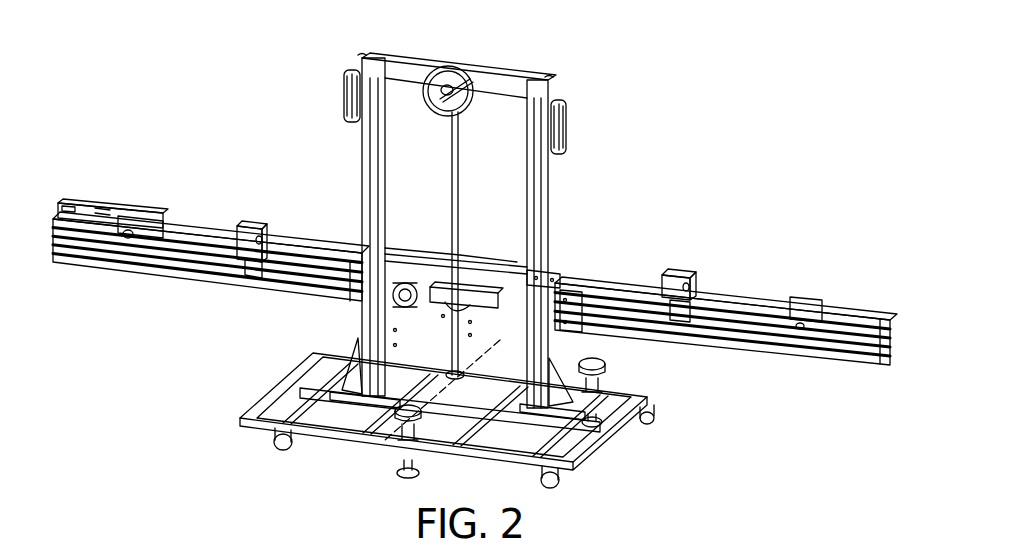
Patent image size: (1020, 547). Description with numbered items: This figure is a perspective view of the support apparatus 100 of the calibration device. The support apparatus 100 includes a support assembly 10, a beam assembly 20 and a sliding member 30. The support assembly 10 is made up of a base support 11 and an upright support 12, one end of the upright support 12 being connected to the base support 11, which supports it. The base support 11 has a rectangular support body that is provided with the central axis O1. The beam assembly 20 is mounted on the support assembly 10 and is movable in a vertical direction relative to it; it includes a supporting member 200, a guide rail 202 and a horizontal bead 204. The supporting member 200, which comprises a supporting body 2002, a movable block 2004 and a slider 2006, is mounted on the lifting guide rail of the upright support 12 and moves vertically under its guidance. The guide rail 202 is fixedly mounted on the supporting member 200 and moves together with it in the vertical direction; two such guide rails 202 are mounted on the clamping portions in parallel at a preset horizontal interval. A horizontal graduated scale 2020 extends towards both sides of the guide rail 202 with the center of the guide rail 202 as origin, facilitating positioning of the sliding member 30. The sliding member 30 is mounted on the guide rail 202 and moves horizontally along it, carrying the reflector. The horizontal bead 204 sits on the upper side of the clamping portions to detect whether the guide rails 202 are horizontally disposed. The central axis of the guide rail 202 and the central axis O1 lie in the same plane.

The support apparatus 100 is at (602, 131).
The support assembly 10 is at (250, 312).
The base support 11 is at (318, 356).
The upright support 12 is at (373, 318).
The beam assembly 20 is at (666, 163).
The supporting member 200 is at (623, 197).
The supporting body 2002 is at (490, 268).
The movable block 2004 is at (495, 293).
The slider 2006 is at (558, 283).
The guide rail 202 is at (597, 286).
The horizontal graduated scale 2020 is at (250, 218).
The horizontal bead 204 is at (468, 262).
The sliding member 30 is at (154, 208).
The central axis O1 is at (388, 441).